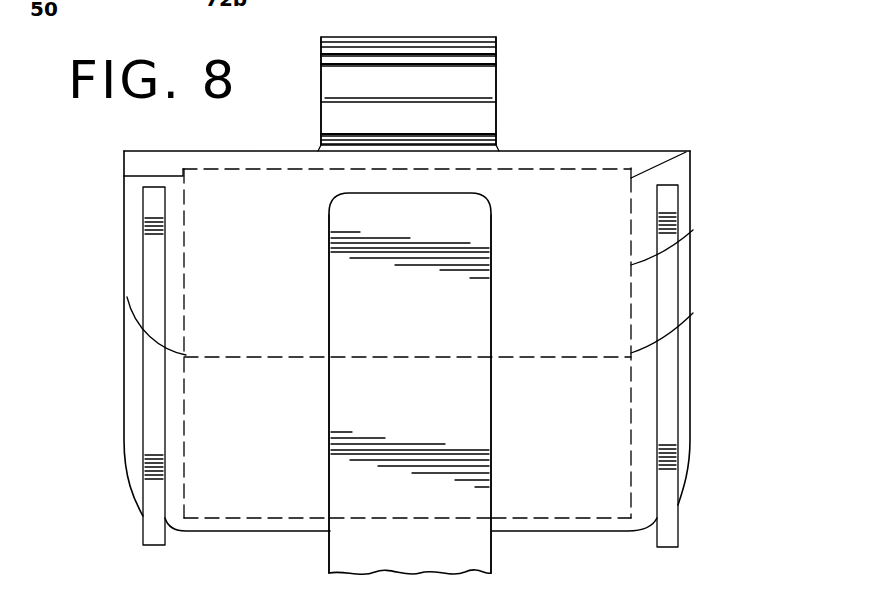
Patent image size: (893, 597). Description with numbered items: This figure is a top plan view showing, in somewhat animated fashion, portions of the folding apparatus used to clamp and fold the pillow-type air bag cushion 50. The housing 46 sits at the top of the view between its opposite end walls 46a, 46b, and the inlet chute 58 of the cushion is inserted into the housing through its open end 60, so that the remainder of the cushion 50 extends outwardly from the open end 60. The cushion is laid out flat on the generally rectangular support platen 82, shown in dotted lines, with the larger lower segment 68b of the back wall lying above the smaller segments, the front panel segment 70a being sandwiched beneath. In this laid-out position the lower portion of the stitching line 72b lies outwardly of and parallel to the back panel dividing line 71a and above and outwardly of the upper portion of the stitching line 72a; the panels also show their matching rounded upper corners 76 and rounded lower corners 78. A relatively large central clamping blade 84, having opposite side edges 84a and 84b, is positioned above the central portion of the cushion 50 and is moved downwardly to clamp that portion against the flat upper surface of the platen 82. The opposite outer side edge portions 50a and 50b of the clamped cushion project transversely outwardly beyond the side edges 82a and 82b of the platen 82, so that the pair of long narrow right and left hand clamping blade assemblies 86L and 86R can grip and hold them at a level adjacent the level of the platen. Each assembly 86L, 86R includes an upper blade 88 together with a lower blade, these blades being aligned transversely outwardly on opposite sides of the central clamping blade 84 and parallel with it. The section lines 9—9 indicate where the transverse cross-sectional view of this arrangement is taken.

The section lines 9 is at (87, 384).
The housing 46 is at (405, 37).
The end wall 46a is at (321, 70).
The end wall 46b is at (496, 60).
The air bag cushion 50 is at (610, 540).
The outer side edge portion 50a is at (178, 237).
The outer side edge portion 50b is at (638, 230).
The inlet chute 58 is at (345, 152).
The open end 60 is at (480, 152).
The lower segment 68b is at (588, 338).
The panel segment 70a is at (210, 356).
The dividing line 71a is at (565, 151).
The line of stitching 72a is at (292, 358).
The line of stitching 72b is at (218, 533).
The rounded upper corners 76 is at (128, 445).
The rounded lower corners 78 is at (125, 338).
The support platen 82 is at (695, 226).
The side edge 82a is at (124, 176).
The side edge 82b is at (676, 155).
The central clamping blade 84 is at (416, 398).
The side edge 84a is at (329, 292).
The side edge 84b is at (491, 263).
The left hand clamping blade assembly 86L is at (150, 442).
The right hand clamping blade assembly 86R is at (665, 474).
The upper blade 88 is at (145, 525).